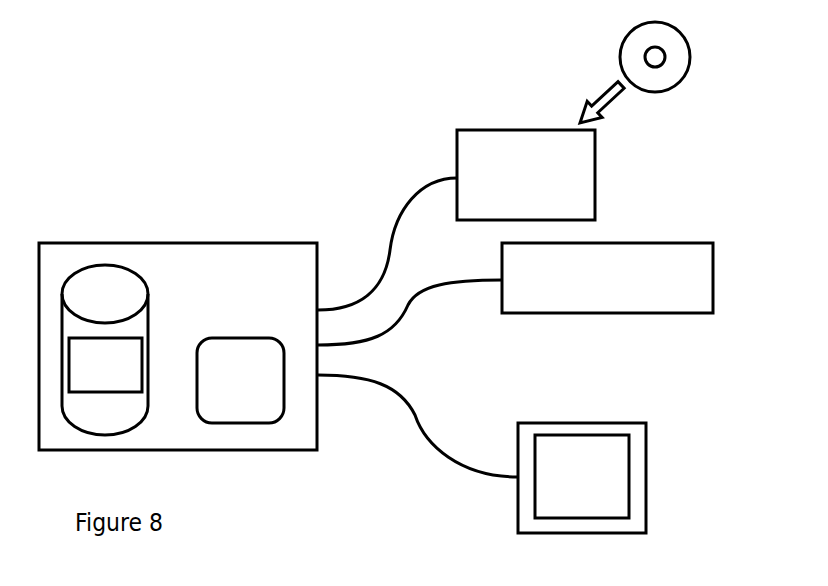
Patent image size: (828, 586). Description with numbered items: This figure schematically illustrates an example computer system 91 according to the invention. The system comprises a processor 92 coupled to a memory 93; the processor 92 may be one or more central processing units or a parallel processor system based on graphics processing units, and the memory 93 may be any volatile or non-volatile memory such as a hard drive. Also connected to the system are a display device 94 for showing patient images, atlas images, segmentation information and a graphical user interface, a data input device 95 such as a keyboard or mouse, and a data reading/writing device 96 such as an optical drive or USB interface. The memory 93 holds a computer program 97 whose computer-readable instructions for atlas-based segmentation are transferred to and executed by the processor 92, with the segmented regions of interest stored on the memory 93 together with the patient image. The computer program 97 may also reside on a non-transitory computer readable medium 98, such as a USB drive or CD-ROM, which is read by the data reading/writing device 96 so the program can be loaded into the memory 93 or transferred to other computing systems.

The computer system 91 is at (308, 177).
The processor 92 is at (262, 397).
The memory 93 is at (88, 296).
The display device 94 is at (632, 463).
The data input device 95 is at (702, 279).
The data reading/writing device 96 is at (583, 148).
The computer program 97 is at (121, 379).
The non-transitory computer readable medium 98 is at (687, 58).